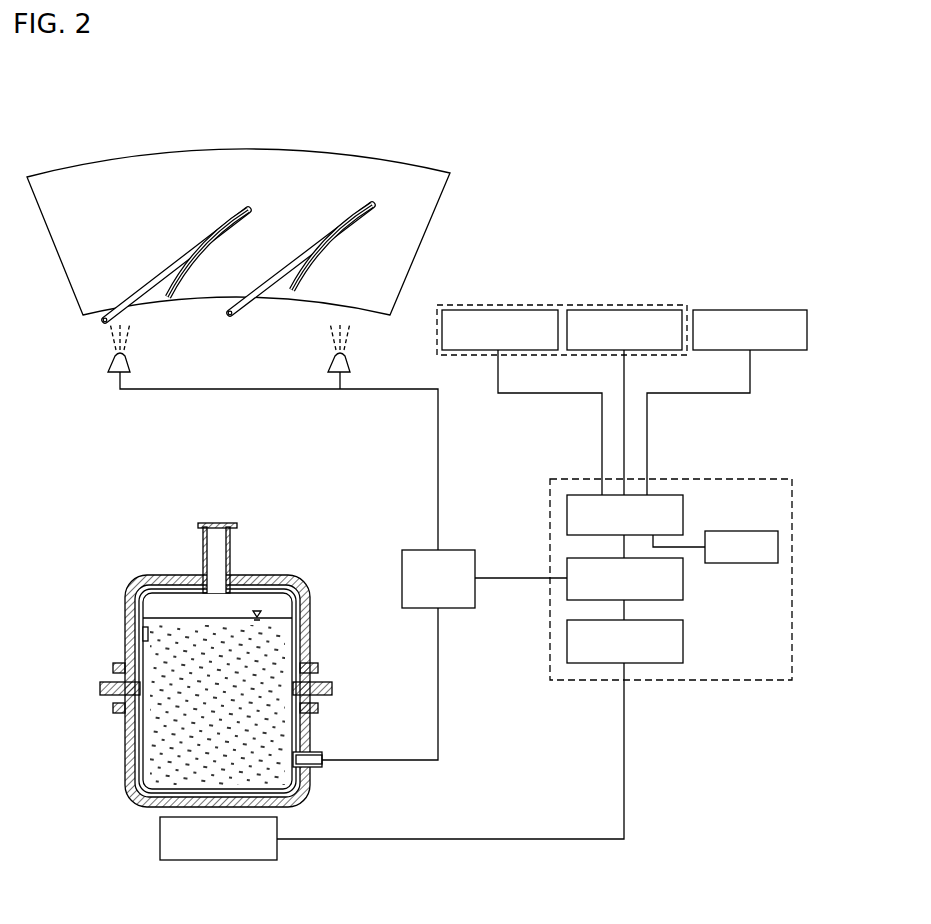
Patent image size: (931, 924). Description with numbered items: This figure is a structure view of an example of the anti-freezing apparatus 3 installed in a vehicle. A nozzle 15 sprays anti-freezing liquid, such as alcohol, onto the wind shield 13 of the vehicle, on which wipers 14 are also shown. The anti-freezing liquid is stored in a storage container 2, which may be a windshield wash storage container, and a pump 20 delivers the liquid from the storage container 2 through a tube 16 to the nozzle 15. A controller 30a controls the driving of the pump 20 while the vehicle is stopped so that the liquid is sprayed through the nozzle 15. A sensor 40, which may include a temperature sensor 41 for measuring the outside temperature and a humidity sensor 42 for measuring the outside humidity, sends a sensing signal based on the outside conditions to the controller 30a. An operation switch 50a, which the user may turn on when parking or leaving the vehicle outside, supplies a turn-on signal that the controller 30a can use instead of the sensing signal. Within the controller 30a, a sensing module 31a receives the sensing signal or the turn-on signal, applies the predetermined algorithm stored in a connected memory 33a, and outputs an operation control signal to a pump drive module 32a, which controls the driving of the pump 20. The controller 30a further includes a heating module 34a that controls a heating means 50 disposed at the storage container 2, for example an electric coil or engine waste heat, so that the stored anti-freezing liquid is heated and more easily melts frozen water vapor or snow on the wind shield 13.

The storage container 2 is at (130, 803).
The anti-freezing apparatus 3 is at (584, 87).
The wind shield 13 is at (273, 158).
The wiper 14 is at (227, 220).
The nozzle 15 is at (108, 370).
The tube 16 is at (438, 454).
The pump 20 is at (412, 550).
The controller 30a is at (792, 512).
The sensing module 31a is at (683, 498).
The pump drive module 32a is at (683, 598).
The memory 33a is at (778, 545).
The heating module 34a is at (683, 652).
The sensor 40 is at (656, 305).
The temperature sensor 41 is at (513, 305).
The humidity sensor 42 is at (607, 305).
The heating means 50 is at (277, 852).
The operation switch 50a is at (788, 310).